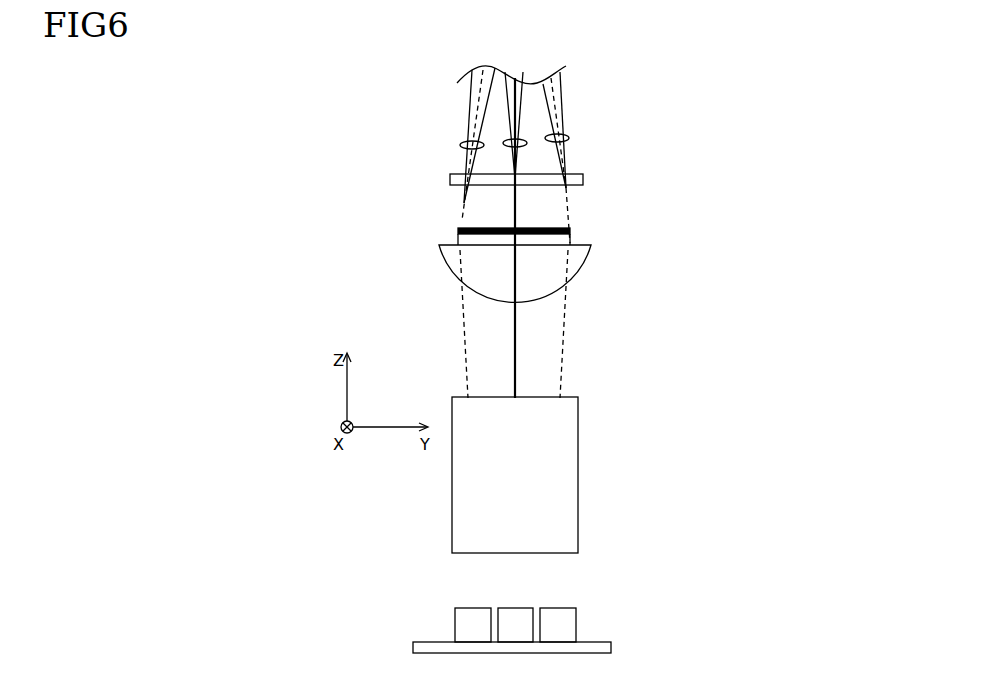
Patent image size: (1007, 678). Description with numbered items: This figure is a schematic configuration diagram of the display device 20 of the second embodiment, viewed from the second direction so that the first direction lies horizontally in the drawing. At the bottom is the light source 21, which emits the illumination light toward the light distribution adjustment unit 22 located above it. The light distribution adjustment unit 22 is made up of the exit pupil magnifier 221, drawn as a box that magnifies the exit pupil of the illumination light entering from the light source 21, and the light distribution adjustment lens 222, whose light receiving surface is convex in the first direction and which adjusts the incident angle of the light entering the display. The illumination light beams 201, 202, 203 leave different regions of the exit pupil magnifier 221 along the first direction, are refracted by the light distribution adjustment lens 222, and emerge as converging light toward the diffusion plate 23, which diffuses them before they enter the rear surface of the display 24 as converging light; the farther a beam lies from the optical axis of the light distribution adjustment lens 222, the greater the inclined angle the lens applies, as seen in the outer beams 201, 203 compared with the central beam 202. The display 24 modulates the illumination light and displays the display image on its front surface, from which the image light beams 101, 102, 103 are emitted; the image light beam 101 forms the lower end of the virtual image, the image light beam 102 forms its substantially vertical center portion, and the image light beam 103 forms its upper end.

The display device 20 is at (626, 76).
The light source 21 is at (571, 605).
The light distribution adjustment unit 22 is at (561, 399).
The diffusion plate 23 is at (572, 227).
The display 24 is at (584, 176).
The image light beam 101 is at (569, 138).
The image light beam 102 is at (505, 141).
The image light beam 103 is at (460, 145).
The illumination light beam 201 is at (572, 207).
The illumination light beam 202 is at (513, 207).
The illumination light beam 203 is at (461, 216).
The exit pupil magnifier 221 is at (548, 425).
The light distribution adjustment lens 222 is at (578, 273).